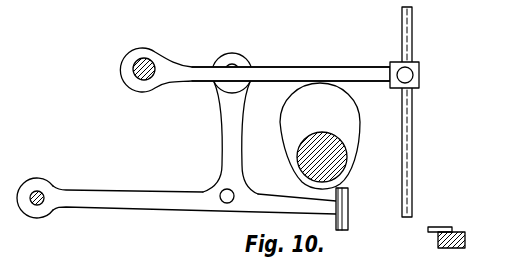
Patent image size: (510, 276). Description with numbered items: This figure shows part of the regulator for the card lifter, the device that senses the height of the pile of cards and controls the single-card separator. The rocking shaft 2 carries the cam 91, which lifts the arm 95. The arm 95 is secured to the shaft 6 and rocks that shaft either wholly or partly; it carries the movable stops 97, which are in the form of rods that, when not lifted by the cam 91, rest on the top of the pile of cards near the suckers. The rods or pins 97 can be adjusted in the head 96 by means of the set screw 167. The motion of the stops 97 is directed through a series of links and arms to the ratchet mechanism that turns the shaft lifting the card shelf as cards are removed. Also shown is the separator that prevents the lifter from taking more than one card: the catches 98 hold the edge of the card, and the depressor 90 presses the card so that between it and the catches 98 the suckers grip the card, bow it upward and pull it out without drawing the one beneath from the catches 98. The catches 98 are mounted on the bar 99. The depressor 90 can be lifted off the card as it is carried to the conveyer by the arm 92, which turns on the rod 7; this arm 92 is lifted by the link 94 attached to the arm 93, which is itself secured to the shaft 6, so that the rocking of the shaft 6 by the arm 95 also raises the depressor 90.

The rocking shaft 2 is at (322, 158).
The shaft 6 is at (147, 60).
The rod 7 is at (37, 191).
The depressor 90 is at (349, 200).
The cam 91 is at (281, 122).
The arm 92 is at (142, 178).
The arm 93 is at (217, 63).
The link 94 is at (233, 140).
The arm 95 is at (347, 67).
The head 96 is at (420, 70).
The movable stops 97 is at (413, 120).
The catches 98 is at (445, 227).
The bar 99 is at (466, 238).
The set screw 167 is at (406, 75).